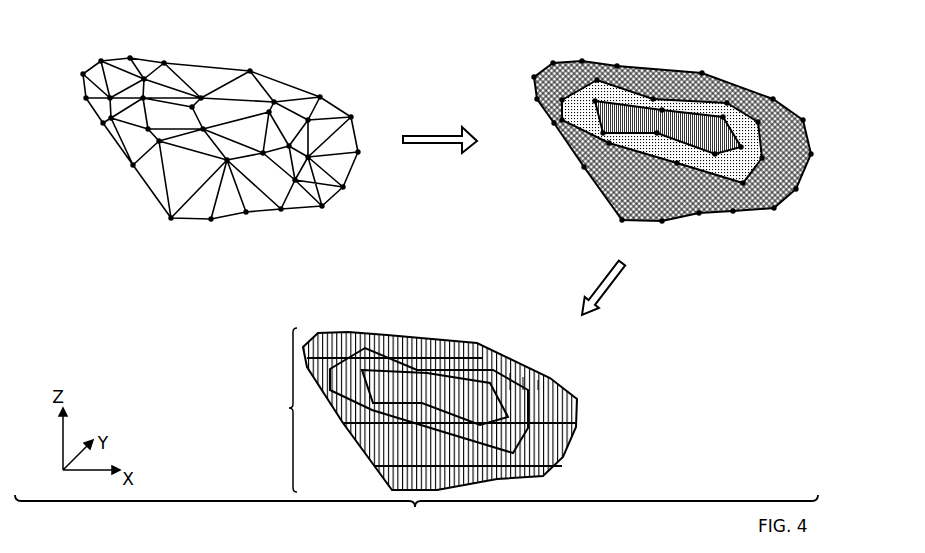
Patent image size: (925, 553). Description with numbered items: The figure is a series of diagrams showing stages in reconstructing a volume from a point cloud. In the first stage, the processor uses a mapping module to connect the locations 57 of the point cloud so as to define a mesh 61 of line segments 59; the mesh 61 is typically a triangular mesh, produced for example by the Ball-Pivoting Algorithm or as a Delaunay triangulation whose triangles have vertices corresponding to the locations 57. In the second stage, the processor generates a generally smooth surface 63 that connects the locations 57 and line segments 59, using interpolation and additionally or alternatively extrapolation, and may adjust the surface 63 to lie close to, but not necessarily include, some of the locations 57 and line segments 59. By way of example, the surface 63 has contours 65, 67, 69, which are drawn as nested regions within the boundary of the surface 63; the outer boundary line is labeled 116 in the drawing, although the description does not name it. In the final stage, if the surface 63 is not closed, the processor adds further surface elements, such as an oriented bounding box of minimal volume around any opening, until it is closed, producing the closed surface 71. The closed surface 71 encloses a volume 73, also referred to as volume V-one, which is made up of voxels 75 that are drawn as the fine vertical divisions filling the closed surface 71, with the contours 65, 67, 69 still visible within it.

The locations 57 is at (82, 73).
The line segments 59 is at (131, 57).
The mesh 61 is at (128, 230).
The surface 63 is at (581, 255).
The outer boundary 116 is at (808, 128).
The contour 65 is at (635, 133).
The contour 67 is at (753, 173).
The contour 69 is at (713, 215).
The closed surface 71 is at (402, 382).
The volume 73 is at (282, 410).
The voxels 75 is at (538, 380).